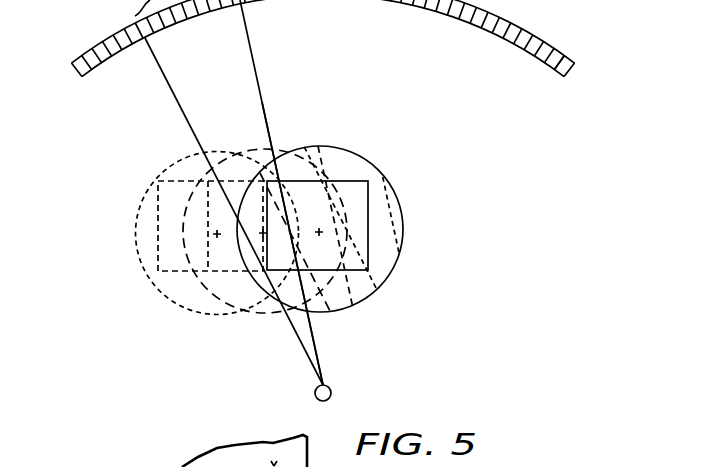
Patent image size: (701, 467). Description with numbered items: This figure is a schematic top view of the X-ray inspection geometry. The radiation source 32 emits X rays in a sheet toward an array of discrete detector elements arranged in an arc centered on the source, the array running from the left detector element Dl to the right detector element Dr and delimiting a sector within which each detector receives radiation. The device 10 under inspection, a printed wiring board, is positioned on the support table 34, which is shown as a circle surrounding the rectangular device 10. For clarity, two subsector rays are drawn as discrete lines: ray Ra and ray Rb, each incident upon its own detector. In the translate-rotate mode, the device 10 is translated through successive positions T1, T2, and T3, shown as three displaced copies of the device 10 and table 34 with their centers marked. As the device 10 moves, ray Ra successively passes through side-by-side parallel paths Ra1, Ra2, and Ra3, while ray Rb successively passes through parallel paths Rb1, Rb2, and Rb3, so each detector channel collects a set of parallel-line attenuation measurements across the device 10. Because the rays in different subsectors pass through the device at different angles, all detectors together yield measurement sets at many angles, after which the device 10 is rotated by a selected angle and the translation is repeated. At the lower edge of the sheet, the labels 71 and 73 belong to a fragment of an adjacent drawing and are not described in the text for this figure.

The device under inspection 10 is at (362, 225).
The radiation source 32 is at (332, 392).
The support table 34 is at (383, 268).
The left detector element Dl is at (80, 56).
The right detector element Dr is at (572, 62).
The discrete ray Ra is at (186, 118).
The discrete ray Rb is at (266, 110).
The parallel path Ra1 is at (370, 305).
The parallel path Ra2 is at (327, 313).
The parallel path Ra3 is at (277, 303).
The parallel path Rb1 is at (385, 178).
The parallel path Rb2 is at (326, 150).
The parallel path Rb3 is at (276, 150).
The first translation position T1 is at (219, 237).
The second translation position T2 is at (265, 236).
The third translation position T3 is at (321, 234).
The signal trace 71 is at (93, 466).
The signal pulse 73 is at (274, 466).